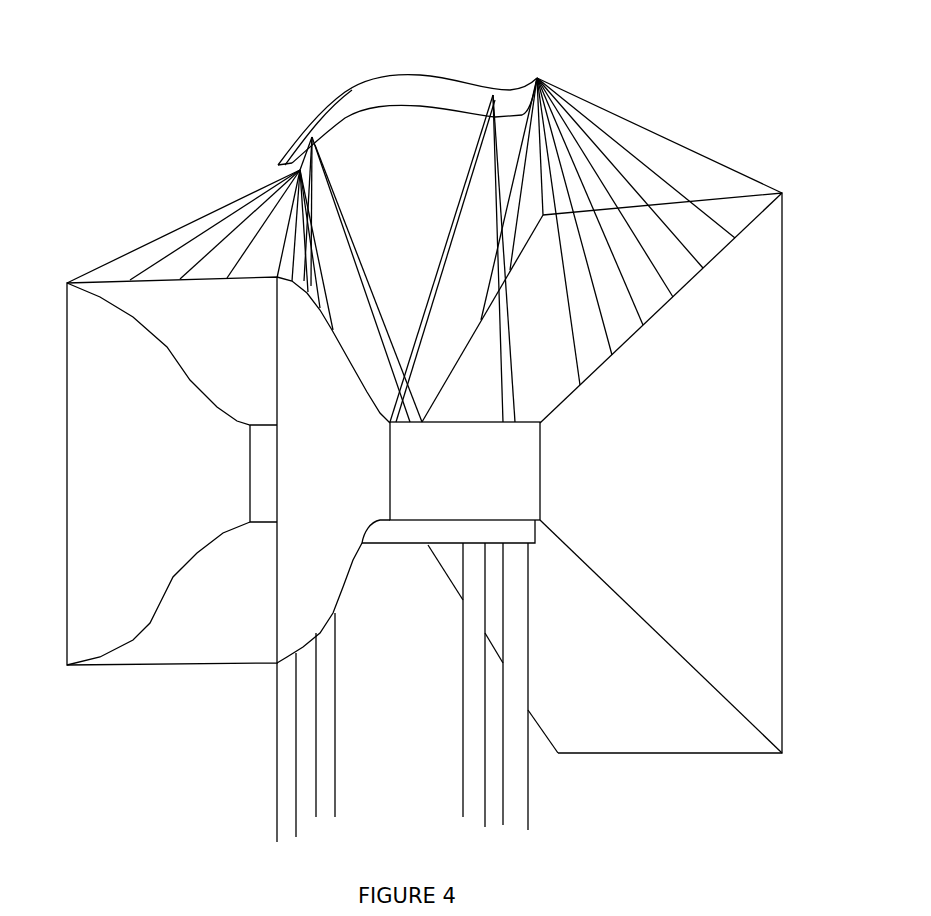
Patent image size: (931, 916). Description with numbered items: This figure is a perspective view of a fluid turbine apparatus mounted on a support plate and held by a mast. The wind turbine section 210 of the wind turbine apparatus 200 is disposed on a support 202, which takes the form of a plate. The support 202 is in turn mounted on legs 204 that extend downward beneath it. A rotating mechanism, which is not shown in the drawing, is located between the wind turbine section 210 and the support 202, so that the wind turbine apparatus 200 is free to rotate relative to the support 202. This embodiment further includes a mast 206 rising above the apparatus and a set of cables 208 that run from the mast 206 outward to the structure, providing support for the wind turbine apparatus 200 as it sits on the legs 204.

The wind turbine apparatus 200 is at (153, 695).
The support 202 is at (407, 533).
The legs 204 is at (513, 767).
The mast 206 is at (400, 90).
The cables 208 is at (203, 210).
The wind turbine section 210 is at (527, 453).